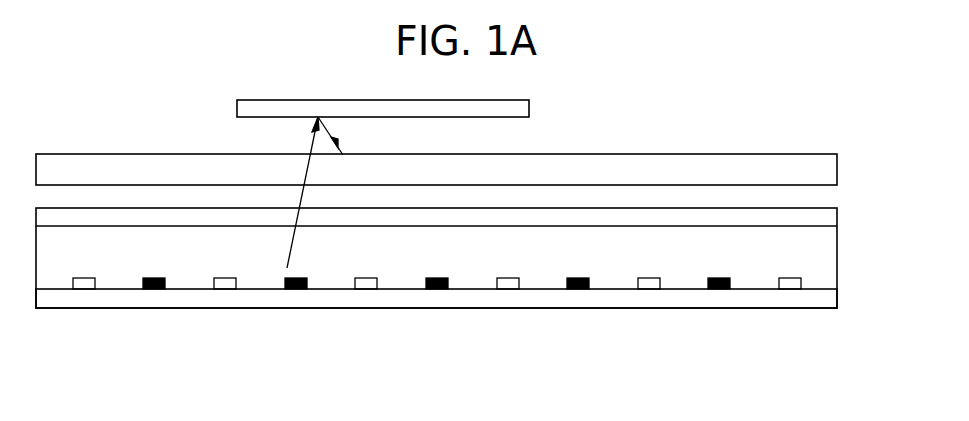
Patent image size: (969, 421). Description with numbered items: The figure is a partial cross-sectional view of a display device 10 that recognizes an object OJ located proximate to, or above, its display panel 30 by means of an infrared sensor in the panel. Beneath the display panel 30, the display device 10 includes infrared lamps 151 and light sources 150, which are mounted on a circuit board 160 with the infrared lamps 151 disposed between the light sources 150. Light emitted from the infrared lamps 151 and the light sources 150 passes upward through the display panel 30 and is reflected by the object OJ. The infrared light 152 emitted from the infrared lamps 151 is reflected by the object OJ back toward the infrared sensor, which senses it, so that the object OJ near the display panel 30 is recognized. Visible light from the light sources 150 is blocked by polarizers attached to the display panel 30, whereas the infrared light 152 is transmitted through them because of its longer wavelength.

The object OJ is at (512, 108).
The display panel 30 is at (826, 175).
The display device 10 is at (136, 330).
The circuit board 160 is at (826, 302).
The light sources 150 is at (366, 291).
The infrared lamps 151 is at (299, 291).
The infrared light 152 is at (311, 147).